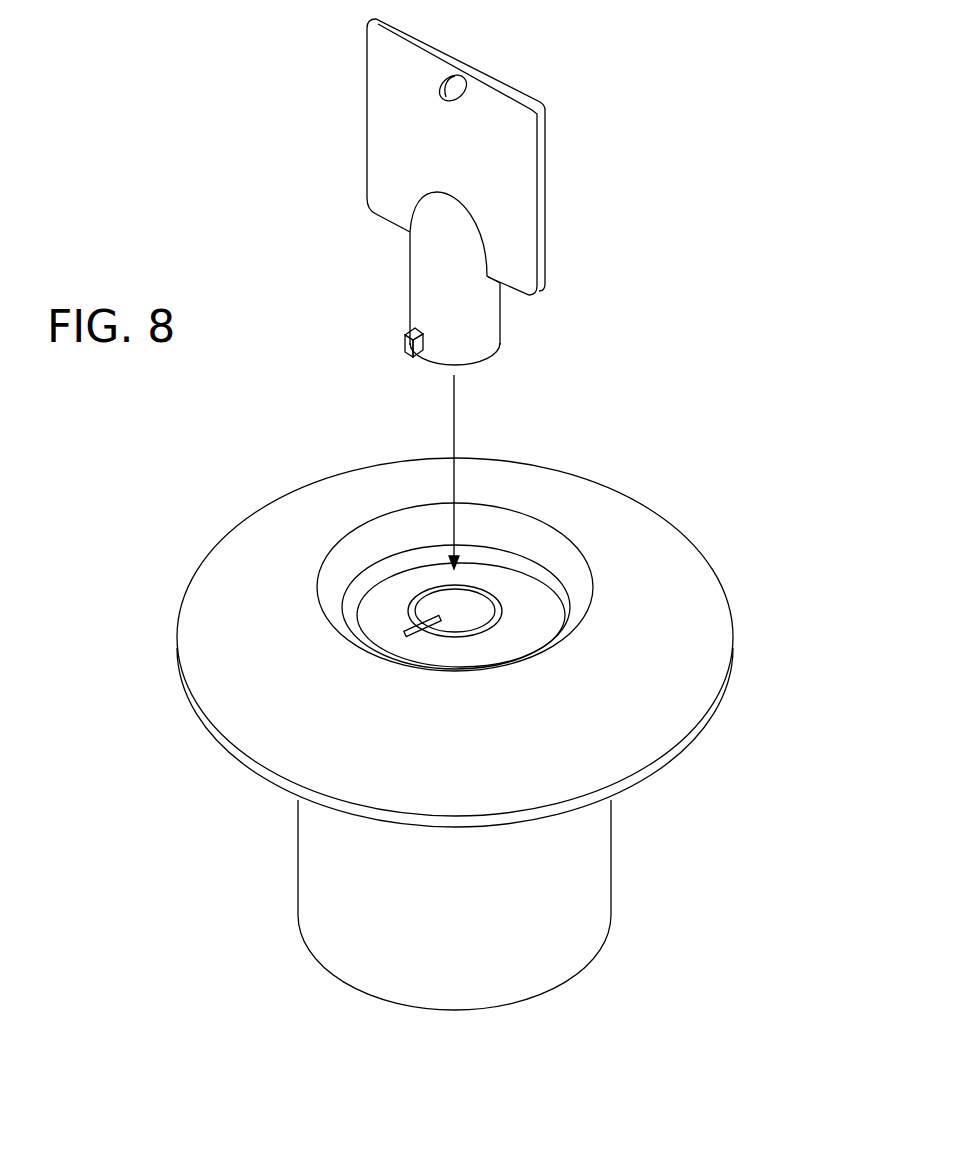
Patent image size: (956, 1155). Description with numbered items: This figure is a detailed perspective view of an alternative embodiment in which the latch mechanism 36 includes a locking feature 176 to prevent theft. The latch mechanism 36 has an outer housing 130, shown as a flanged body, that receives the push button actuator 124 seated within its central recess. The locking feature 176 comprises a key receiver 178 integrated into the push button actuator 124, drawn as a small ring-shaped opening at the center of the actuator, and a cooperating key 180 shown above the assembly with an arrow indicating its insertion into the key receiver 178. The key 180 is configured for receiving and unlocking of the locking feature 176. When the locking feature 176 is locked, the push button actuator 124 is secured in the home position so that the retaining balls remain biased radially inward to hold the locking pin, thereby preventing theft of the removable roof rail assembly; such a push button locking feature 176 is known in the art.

The latch mechanism 36 is at (439, 711).
The push button actuator 124 is at (523, 610).
The outer housing 130 is at (683, 605).
The locking feature 176 is at (542, 192).
The key receiver 178 is at (479, 596).
The key 180 is at (432, 239).